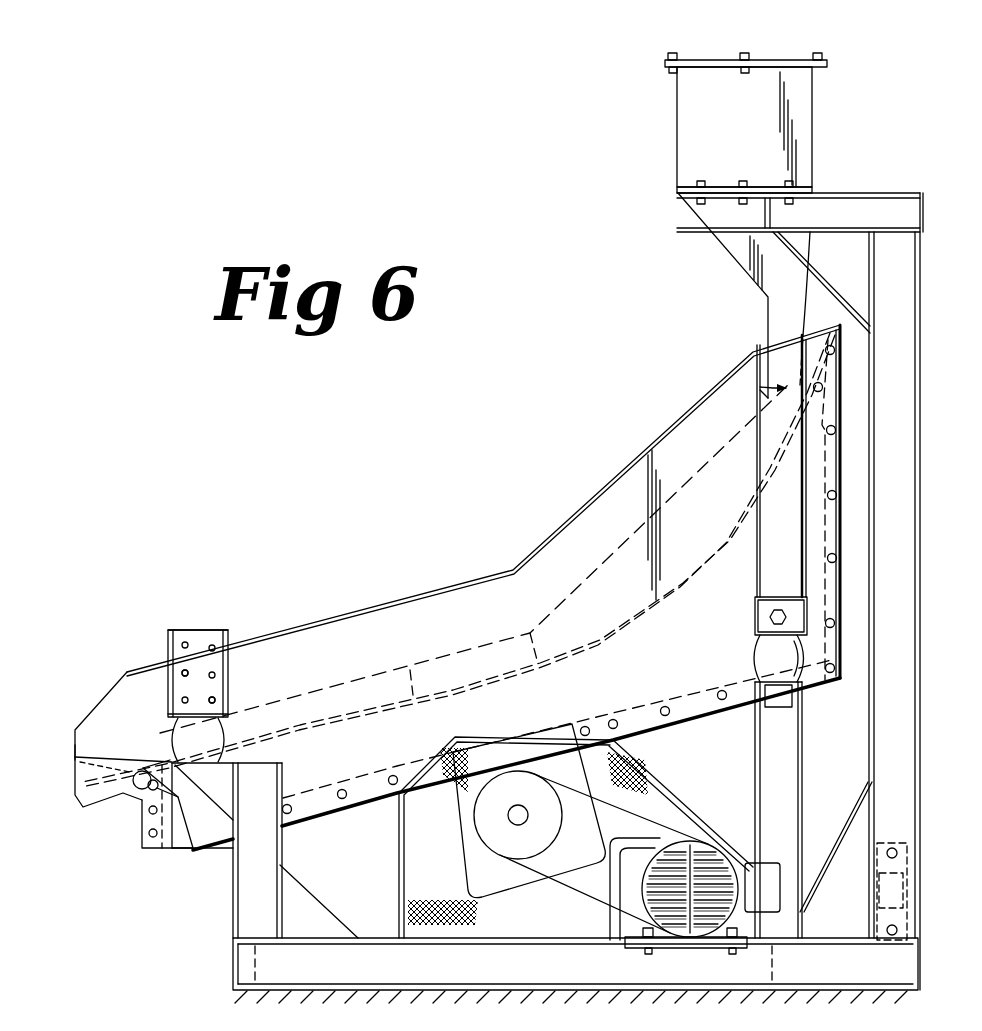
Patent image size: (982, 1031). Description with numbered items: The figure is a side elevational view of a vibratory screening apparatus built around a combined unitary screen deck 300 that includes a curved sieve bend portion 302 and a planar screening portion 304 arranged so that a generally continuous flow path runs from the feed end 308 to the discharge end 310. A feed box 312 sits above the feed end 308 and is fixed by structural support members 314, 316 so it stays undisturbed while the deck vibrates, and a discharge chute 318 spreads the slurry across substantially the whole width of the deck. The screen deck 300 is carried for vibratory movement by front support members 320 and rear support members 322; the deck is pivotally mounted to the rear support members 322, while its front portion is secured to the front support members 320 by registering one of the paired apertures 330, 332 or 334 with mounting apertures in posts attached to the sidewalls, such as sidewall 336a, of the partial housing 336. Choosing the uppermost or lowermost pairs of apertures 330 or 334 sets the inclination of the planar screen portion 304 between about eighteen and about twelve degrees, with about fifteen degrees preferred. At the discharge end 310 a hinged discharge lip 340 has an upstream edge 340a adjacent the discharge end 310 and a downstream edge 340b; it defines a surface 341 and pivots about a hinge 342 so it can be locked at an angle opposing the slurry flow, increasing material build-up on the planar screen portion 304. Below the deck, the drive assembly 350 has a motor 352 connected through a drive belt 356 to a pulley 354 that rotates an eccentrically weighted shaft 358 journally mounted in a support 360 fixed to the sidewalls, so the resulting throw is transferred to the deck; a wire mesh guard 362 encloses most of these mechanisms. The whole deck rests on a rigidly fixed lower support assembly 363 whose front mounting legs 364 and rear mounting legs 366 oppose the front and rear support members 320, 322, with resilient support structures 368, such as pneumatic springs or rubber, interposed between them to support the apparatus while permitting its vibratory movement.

The combined unitary screen deck 300 is at (395, 457).
The sieve bend portion 302 is at (748, 510).
The planar screening portion 304 is at (483, 587).
The feed end 308 is at (805, 410).
The discharge end 310 is at (158, 756).
The feed box 312 is at (742, 114).
The structural support member 314 is at (915, 564).
The structural support member 316 is at (870, 203).
The discharge chute 318 is at (768, 305).
The front support members 320 is at (229, 659).
The rear support members 322 is at (755, 603).
The paired apertures 330 is at (212, 646).
The paired apertures 332 is at (187, 677).
The paired apertures 334 is at (213, 700).
The partial housing 336 is at (483, 578).
The sidewall 336a is at (517, 649).
The hinged discharge lip 340 is at (123, 774).
The upstream edge 340a is at (180, 849).
The downstream edge 340b is at (75, 757).
The surface 341 is at (94, 768).
The hinge 342 is at (140, 790).
The drive assembly 350 is at (589, 854).
The motor 352 is at (683, 940).
The pulley 354 is at (492, 827).
The drive chain or belt 356 is at (660, 853).
The shaft 358 is at (523, 818).
The support 360 is at (517, 888).
The wire mesh guard 362 is at (657, 775).
The lower support assembly 363 is at (530, 979).
The front mounting legs 364 is at (243, 766).
The rear mounting legs 366 is at (793, 763).
The support structures 368 is at (172, 728).